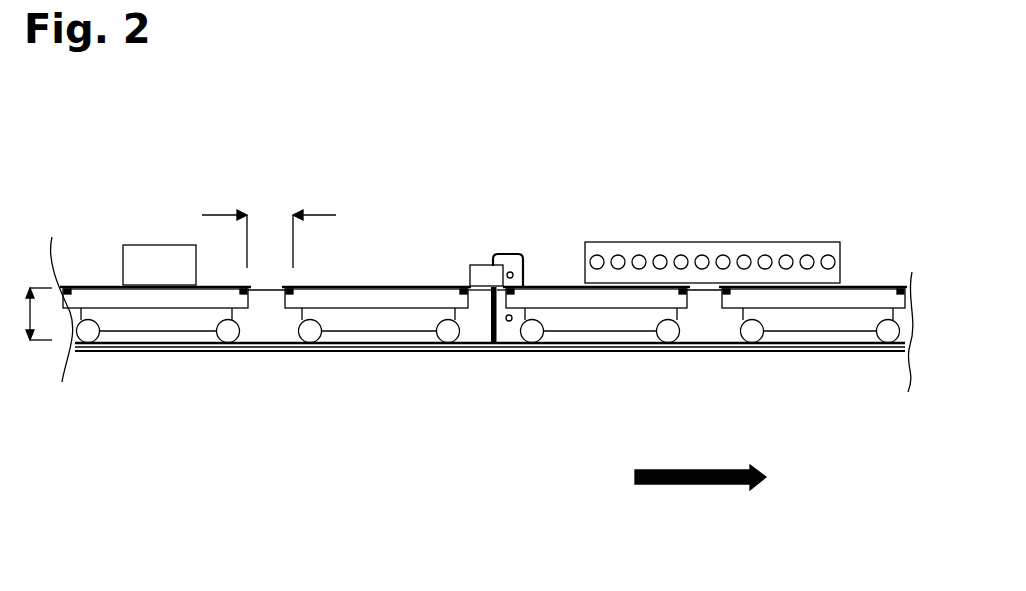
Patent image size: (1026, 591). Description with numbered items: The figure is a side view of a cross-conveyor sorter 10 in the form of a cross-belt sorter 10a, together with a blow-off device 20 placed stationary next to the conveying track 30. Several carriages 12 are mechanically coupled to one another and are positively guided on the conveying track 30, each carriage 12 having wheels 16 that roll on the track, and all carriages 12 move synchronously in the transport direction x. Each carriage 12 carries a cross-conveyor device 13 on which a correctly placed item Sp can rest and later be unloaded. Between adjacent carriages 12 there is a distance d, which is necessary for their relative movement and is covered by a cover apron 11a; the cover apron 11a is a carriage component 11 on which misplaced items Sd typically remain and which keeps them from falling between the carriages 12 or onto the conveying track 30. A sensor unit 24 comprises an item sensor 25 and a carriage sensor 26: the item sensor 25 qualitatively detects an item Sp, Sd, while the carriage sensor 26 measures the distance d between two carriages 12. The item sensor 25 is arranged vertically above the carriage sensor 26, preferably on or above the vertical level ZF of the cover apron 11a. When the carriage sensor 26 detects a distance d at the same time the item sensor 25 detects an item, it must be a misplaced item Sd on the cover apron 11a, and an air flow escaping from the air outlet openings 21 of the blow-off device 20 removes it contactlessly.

The cross-conveyor sorter 10 is at (462, 239).
The cross-belt sorter 10a is at (297, 131).
The carriage component 11 is at (270, 300).
The cover apron 11a is at (477, 293).
The carriage 12 is at (140, 323).
The cross-conveyor device 13 is at (100, 284).
The wheel 16 is at (228, 336).
The blow-off device 20 is at (712, 167).
The air outlet opening 21 is at (702, 255).
The sensor unit 24 is at (525, 262).
The item sensor 25 is at (509, 272).
The carriage sensor 26 is at (508, 349).
The conveying track 30 is at (718, 352).
The correctly placed item Sp is at (172, 244).
The misplaced item Sd is at (470, 263).
The distance d is at (217, 215).
The vertical level of the cover apron ZF is at (30, 342).
The transport direction x is at (705, 488).